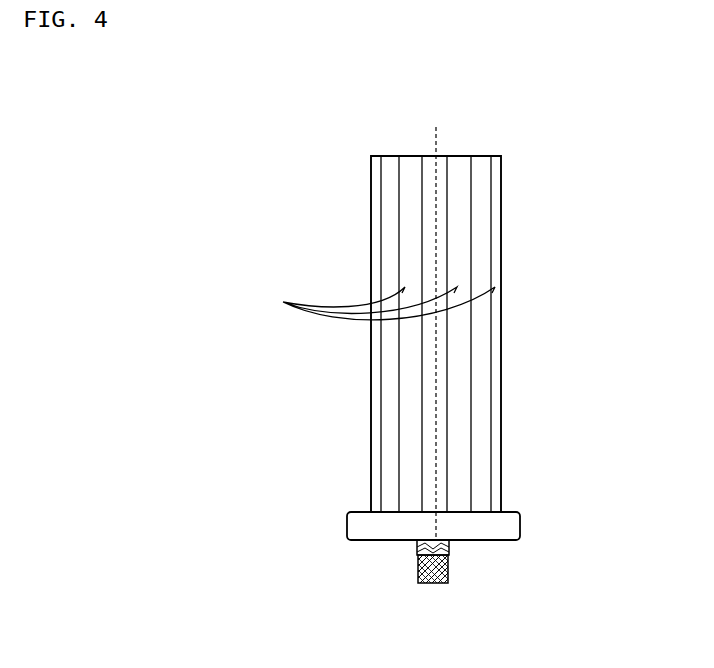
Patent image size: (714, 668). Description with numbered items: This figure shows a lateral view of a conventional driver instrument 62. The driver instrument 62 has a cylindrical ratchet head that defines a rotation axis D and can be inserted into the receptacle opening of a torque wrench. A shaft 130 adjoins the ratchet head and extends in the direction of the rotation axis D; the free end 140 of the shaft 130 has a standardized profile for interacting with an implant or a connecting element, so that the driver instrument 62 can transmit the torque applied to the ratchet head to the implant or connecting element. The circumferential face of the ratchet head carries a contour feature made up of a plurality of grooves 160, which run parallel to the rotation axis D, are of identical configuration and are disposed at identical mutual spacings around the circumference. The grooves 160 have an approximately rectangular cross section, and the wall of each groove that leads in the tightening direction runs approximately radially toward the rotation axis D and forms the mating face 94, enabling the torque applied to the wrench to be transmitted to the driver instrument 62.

The driver instrument 62 is at (332, 373).
The grooves 160 is at (485, 172).
The mating face 94 is at (370, 303).
The free end of the shaft 140 is at (415, 572).
The shaft 130 is at (458, 567).
The rotation axis D is at (445, 320).